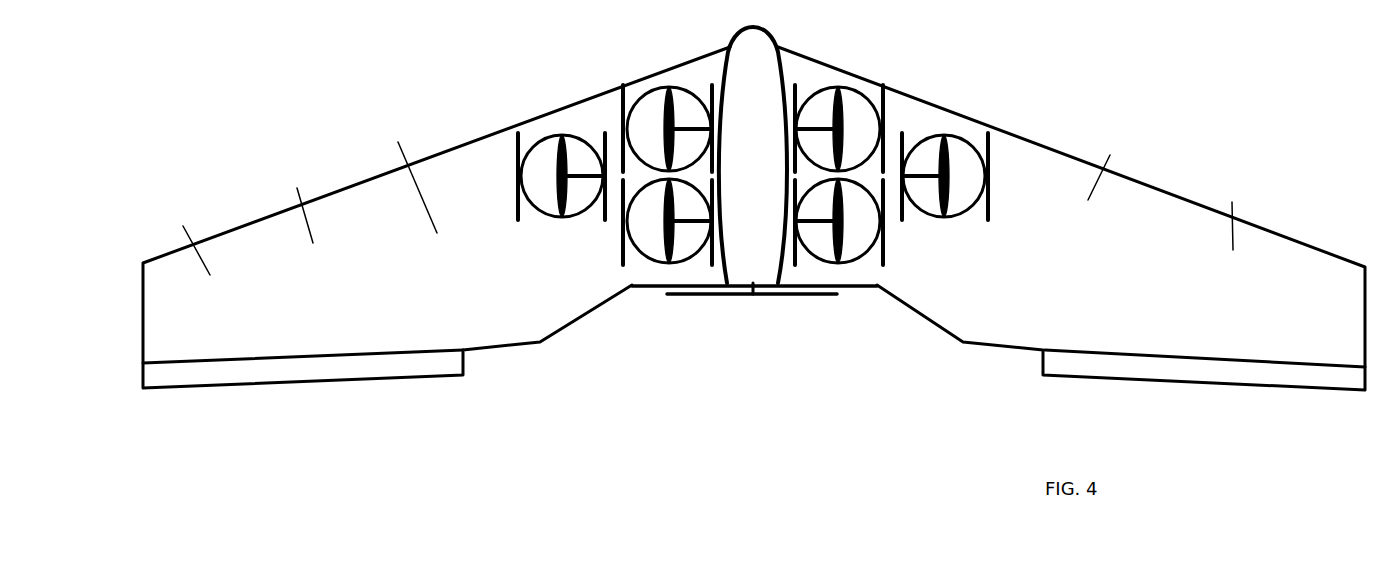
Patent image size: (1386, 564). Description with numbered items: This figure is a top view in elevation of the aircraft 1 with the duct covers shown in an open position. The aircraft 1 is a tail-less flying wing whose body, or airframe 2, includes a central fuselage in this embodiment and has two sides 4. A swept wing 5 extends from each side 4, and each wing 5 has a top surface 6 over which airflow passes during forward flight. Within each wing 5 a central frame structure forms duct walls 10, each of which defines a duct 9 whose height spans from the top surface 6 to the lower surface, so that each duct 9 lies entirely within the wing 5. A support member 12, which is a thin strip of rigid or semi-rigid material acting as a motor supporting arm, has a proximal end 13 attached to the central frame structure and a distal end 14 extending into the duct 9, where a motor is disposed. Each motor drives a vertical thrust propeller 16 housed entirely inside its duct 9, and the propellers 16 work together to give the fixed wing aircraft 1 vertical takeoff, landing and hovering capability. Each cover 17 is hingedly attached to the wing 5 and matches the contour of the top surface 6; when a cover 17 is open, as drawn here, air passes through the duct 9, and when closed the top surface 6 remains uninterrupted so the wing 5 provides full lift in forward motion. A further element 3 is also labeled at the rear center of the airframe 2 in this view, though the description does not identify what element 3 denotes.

The aircraft 1 is at (754, 250).
The airframe 2 is at (745, 48).
The rear connecting beam 3 is at (788, 296).
The side 4 is at (645, 202).
The wing 5 is at (760, 204).
The top surface 6 is at (411, 178).
The duct 9 is at (542, 165).
The duct wall 10 is at (638, 93).
The support member 12 is at (810, 223).
The proximal end 13 is at (707, 225).
The distal end 14 is at (660, 250).
The propeller 16 is at (840, 255).
The cover 17 is at (797, 95).